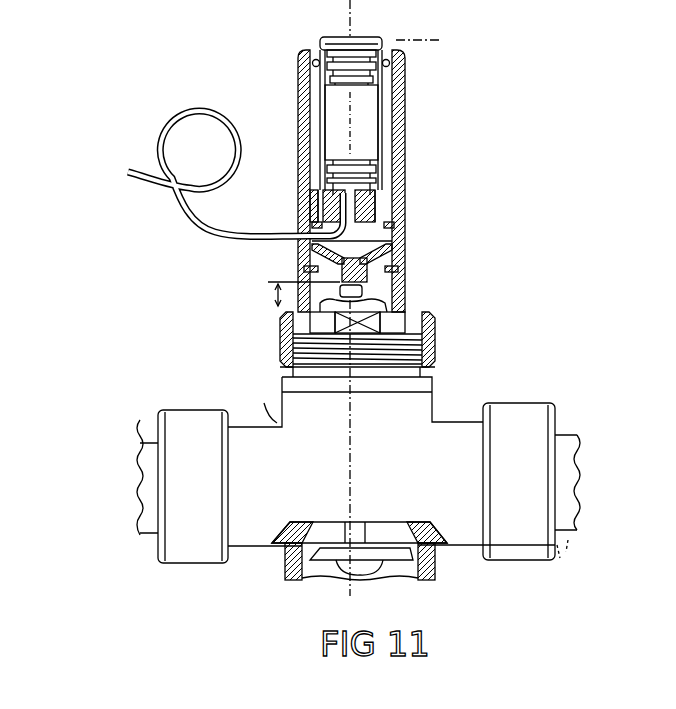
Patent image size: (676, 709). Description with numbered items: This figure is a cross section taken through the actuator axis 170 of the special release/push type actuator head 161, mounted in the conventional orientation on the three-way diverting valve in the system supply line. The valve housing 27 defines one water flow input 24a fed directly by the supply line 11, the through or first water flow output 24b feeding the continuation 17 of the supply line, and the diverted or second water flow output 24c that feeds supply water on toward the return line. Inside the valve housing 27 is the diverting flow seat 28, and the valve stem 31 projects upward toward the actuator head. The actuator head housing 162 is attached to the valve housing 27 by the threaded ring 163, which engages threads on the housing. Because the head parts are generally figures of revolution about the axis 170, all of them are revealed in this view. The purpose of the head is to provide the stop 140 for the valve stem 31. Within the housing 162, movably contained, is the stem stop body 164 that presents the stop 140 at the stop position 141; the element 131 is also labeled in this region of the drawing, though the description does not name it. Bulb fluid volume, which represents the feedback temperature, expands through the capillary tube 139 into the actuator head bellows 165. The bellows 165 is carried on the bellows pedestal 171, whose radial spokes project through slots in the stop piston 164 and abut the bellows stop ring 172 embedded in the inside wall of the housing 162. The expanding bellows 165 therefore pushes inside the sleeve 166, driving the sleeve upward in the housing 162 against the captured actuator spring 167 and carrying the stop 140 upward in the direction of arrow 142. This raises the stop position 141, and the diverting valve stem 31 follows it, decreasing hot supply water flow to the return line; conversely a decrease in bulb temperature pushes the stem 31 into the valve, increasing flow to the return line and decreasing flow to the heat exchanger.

The actuator axis 170 is at (350, 19).
The release/push type actuator head 161 is at (270, 74).
The housing 162 is at (400, 92).
The captured actuator spring 167 is at (390, 68).
The sleeve 166 is at (384, 150).
The actuator head bellows 165 is at (368, 121).
The bellows pedestal 171 is at (394, 210).
The bellows stop ring 172 is at (400, 228).
The stem stop body 164 is at (394, 248).
The stop position 141 is at (285, 282).
The stop 140 is at (400, 275).
The valve member 131 is at (380, 285).
The arrow 142 is at (272, 300).
The threaded ring 163 is at (436, 327).
The first water flow output 24b is at (207, 396).
The continuation of the supply line 17 is at (133, 467).
The water flow input 24a is at (530, 566).
The supply line 11 is at (570, 566).
The second water flow output 24c is at (278, 601).
The housing 27 is at (285, 550).
The stem 31 is at (378, 522).
The diverting flow seat 28 is at (315, 547).
The capillary tube 139 is at (138, 184).